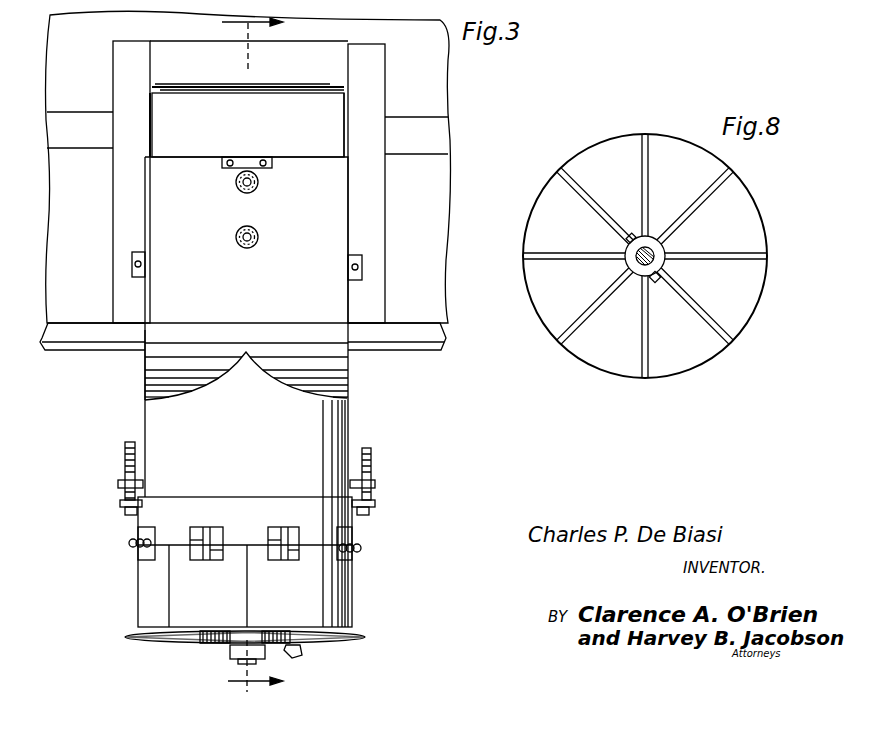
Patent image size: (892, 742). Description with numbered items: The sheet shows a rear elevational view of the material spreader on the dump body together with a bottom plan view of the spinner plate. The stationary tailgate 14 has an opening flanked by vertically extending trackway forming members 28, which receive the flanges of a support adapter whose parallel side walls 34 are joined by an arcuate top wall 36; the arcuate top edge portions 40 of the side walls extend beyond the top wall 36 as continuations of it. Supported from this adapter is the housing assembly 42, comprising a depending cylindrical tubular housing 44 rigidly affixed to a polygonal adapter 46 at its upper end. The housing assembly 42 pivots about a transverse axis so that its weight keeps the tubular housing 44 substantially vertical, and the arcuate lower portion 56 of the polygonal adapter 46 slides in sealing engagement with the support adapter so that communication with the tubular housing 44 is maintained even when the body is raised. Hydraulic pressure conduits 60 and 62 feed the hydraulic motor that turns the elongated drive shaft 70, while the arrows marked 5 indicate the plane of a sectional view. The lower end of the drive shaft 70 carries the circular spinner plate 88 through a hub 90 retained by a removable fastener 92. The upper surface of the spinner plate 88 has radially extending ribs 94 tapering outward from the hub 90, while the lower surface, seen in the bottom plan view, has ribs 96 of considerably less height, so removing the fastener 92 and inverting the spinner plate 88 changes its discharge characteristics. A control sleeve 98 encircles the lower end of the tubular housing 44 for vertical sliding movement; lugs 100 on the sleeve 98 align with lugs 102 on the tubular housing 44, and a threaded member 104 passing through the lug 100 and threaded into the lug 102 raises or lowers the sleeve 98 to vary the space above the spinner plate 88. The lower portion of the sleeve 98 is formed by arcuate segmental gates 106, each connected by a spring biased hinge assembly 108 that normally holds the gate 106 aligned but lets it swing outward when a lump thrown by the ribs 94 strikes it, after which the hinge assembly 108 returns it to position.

In FIG. 3, the section line 5- 5 is at (242, 353).
In FIG. 3, the tailgate 14 is at (440, 93).
In FIG. 3, the trackway forming members 28 is at (113, 185).
In FIG. 3, the side walls 34 is at (153, 136).
In FIG. 3, the arcuate top wall 36 is at (317, 52).
In FIG. 3, the arcuate top edge portions 40 is at (153, 110).
In FIG. 3, the housing assembly 42 is at (136, 410).
In FIG. 3, the cylindrical tubular housing 44 is at (338, 430).
In FIG. 3, the polygonal adapter 46 is at (337, 303).
In FIG. 3, the arcuate lower portion 56 is at (350, 392).
In FIG. 3, the hydraulic pressure conduit 60 is at (259, 185).
In FIG. 3, the hydraulic pressure conduit 62 is at (258, 240).
In FIG. 8, the drive shaft 70 is at (646, 250).
In FIG. 3, the spinner plate 88 is at (350, 641).
In FIG. 8, the spinner plate 88 is at (745, 210).
In FIG. 3, the hub 90 is at (235, 657).
In FIG. 8, the hub 90 is at (660, 253).
In FIG. 8, the removable fastener 92 is at (652, 274).
In FIG. 3, the radially extending ribs 94 is at (292, 638).
In FIG. 3, the ribs 96 is at (205, 650).
In FIG. 8, the ribs 96 is at (748, 254).
In FIG. 3, the control sleeve 98 is at (340, 522).
In FIG. 3, the lugs 100 is at (376, 509).
In FIG. 3, the lugs 102 is at (376, 484).
In FIG. 3, the threaded member 104 is at (372, 454).
In FIG. 3, the segmental gates 106 is at (340, 590).
In FIG. 3, the spring biased hinge assembly 108 is at (358, 548).